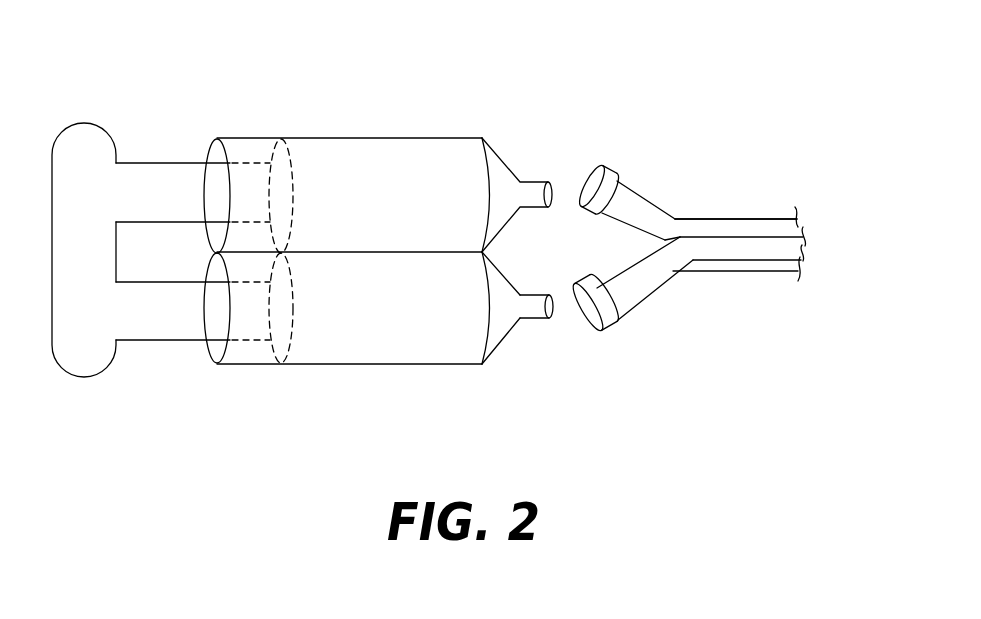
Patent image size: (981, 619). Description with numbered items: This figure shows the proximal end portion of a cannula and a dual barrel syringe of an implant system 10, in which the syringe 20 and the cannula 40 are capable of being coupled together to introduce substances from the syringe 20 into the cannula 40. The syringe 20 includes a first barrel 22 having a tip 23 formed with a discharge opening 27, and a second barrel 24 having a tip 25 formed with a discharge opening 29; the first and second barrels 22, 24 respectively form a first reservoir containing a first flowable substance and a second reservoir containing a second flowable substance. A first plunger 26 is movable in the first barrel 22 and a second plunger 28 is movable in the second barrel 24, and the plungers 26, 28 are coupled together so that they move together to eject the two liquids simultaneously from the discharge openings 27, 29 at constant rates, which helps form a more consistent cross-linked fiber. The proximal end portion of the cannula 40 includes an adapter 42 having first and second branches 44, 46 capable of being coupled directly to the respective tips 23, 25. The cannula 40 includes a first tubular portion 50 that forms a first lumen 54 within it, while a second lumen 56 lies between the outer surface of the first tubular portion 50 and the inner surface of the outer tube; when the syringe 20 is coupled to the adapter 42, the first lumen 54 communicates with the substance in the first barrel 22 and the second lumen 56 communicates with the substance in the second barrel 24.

The system 10 is at (611, 100).
The syringe 20 is at (303, 133).
The first barrel 22 is at (377, 365).
The tip 23 is at (547, 322).
The second barrel 24 is at (390, 137).
The tip 25 is at (533, 178).
The first plunger 26 is at (160, 340).
The discharge opening 27 is at (549, 294).
The second plunger 28 is at (143, 163).
The discharge opening 29 is at (548, 178).
The cannula 40 is at (764, 216).
The adapter 42 is at (680, 207).
The first branch 44 is at (648, 290).
The second branch 46 is at (628, 187).
The first tubular portion 50 is at (800, 230).
The first lumen 54 is at (753, 250).
The second lumen 56 is at (720, 228).